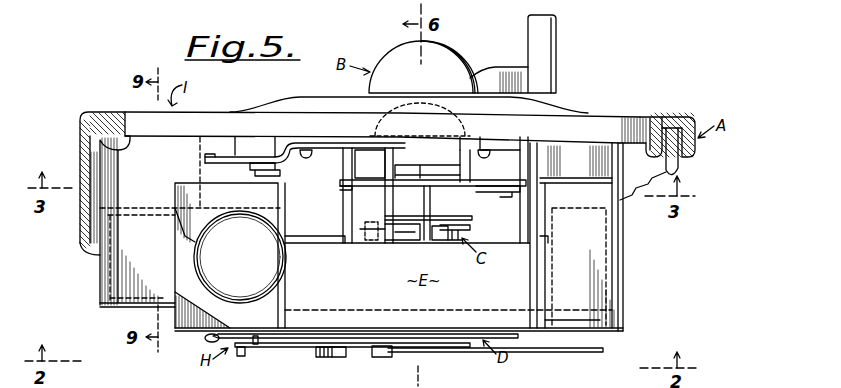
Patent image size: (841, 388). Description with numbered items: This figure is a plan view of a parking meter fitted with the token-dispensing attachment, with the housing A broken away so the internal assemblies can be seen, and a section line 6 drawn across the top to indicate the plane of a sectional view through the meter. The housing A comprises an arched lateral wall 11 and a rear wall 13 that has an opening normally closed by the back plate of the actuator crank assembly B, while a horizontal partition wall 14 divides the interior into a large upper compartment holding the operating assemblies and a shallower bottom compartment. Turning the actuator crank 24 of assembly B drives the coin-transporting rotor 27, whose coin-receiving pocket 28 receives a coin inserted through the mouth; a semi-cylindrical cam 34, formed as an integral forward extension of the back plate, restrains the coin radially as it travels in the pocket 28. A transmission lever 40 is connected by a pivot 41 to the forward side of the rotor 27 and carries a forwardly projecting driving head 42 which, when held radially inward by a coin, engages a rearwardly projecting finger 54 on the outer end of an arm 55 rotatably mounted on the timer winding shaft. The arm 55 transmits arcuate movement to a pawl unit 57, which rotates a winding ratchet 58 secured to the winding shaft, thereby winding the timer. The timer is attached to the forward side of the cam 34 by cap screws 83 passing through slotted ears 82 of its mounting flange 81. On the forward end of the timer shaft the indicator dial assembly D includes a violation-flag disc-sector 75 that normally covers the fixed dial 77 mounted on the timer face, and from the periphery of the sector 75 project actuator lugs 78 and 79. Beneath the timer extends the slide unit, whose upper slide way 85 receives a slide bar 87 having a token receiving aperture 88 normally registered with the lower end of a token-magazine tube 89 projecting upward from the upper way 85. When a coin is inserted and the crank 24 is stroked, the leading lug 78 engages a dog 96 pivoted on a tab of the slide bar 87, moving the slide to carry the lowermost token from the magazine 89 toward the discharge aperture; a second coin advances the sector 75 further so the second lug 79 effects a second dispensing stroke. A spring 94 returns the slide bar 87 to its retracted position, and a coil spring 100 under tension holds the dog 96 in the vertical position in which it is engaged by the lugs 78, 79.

The housing A is at (410, 127).
The actuator crank assembly B is at (423, 67).
The indicator dial assembly D is at (365, 340).
The cup wall 6 is at (624, 285).
The arched lateral wall 11 is at (82, 138).
The rear wall 13 is at (671, 116).
The partition wall 14 is at (672, 164).
The actuator crank 24 is at (501, 68).
The coin-transporting rotor 27 is at (398, 176).
The coin-receiving pocket 28 is at (436, 174).
The semi-cylindrical cam 34 is at (280, 190).
The transmission lever 40 is at (472, 196).
The pivot 41 is at (486, 200).
The driving head 42 is at (423, 198).
The finger 54 is at (440, 240).
The arm 55 is at (404, 240).
The pawl unit 57 is at (378, 222).
The winding ratchet 58 is at (470, 226).
The disc-sector 75 is at (560, 350).
The fixed dial 77 is at (574, 324).
The actuator lug 78 is at (242, 356).
The actuator lug 79 is at (380, 357).
The mounting flange 81 is at (323, 258).
The slotted ears 82 is at (554, 252).
The cap screws 83 is at (306, 240).
The upper slide way 85 is at (606, 256).
The slide bar 87 is at (106, 283).
The token receiving aperture 88 is at (208, 265).
The token-magazine tube 89 is at (233, 309).
The spring 94 is at (207, 338).
The dog 96 is at (340, 358).
The coil spring 100 is at (324, 358).